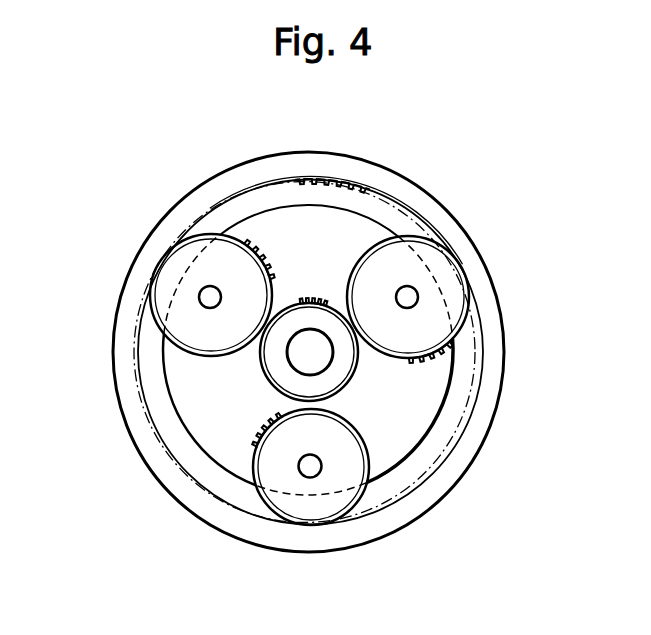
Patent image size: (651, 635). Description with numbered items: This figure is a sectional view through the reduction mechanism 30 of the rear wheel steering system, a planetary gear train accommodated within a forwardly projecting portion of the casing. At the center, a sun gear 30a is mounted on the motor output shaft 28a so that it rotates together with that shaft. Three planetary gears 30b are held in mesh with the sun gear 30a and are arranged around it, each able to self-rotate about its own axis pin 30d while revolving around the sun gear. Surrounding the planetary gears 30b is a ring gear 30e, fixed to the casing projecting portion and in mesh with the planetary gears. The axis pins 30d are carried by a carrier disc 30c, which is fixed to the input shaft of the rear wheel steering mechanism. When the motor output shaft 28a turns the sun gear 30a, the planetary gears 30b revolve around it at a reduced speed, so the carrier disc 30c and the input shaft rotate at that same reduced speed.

The reduction mechanism 30 is at (425, 173).
The sun gear 30a is at (264, 366).
The planetary gears 30b is at (242, 240).
The carrier disc 30c is at (452, 398).
The axis pins 30d is at (206, 301).
The ring gear 30e is at (503, 346).
The motor output shaft 28a is at (316, 354).